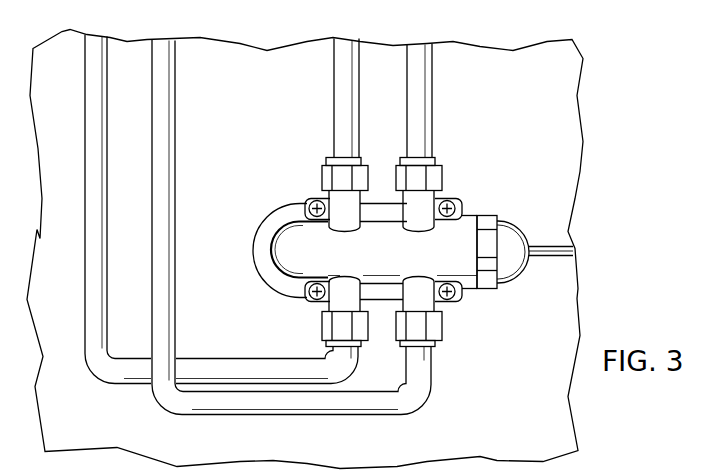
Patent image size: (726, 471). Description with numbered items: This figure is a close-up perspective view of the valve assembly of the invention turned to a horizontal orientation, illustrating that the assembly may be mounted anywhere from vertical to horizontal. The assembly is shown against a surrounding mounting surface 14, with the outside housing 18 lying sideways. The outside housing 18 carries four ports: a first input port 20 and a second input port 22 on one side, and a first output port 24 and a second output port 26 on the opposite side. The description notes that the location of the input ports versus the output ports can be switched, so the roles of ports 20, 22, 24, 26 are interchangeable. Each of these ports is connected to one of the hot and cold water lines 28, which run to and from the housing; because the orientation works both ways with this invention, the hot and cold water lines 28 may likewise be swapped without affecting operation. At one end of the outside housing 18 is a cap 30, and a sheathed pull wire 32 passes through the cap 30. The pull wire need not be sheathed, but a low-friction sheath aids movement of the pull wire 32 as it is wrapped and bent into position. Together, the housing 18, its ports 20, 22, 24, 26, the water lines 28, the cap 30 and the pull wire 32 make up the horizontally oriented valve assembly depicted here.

The panel 14 is at (558, 137).
The outside housing 18 is at (460, 235).
The first input port 20 is at (425, 207).
The second input port 22 is at (333, 202).
The first output port 24 is at (339, 301).
The second output port 26 is at (425, 302).
The hot and cold water lines 28 is at (343, 53).
The cap 30 is at (522, 237).
The sheathed pull wire 32 is at (555, 245).